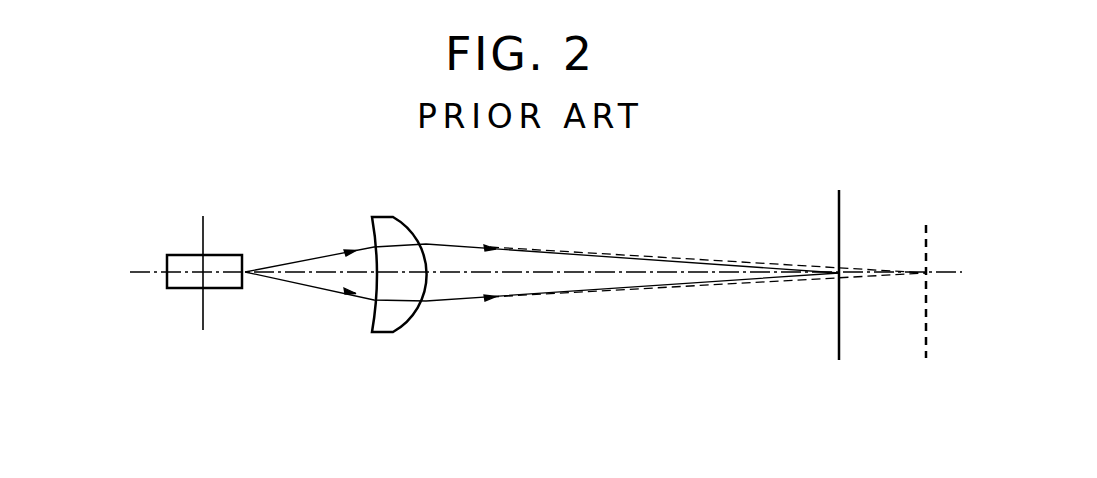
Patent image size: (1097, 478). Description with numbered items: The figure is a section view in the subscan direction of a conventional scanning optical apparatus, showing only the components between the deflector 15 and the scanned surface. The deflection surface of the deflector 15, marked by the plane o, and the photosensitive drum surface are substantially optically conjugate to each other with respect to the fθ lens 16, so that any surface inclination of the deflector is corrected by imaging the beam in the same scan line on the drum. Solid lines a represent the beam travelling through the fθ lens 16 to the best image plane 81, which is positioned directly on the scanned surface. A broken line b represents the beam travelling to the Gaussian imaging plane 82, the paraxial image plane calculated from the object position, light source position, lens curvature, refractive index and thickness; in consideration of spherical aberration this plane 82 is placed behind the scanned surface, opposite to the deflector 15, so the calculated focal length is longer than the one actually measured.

The deflector 15 is at (186, 290).
The object plane o is at (204, 305).
The fθ lens 16 is at (394, 333).
The light beam (solid rays) a is at (462, 300).
The shifted light beam (dashed rays) b is at (644, 290).
The best image plane 81 is at (839, 344).
The Gaussian imaging plane 82 is at (924, 343).